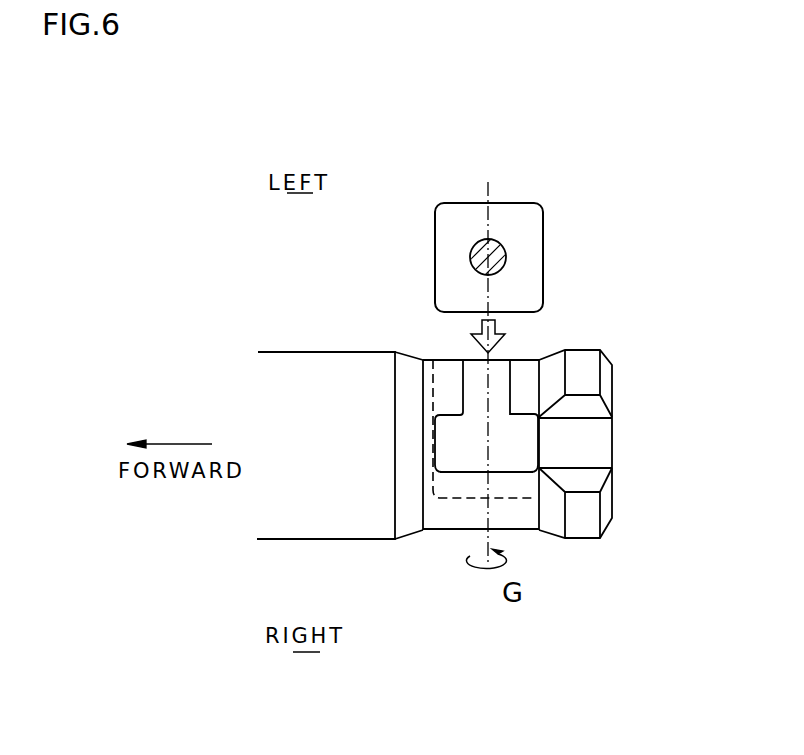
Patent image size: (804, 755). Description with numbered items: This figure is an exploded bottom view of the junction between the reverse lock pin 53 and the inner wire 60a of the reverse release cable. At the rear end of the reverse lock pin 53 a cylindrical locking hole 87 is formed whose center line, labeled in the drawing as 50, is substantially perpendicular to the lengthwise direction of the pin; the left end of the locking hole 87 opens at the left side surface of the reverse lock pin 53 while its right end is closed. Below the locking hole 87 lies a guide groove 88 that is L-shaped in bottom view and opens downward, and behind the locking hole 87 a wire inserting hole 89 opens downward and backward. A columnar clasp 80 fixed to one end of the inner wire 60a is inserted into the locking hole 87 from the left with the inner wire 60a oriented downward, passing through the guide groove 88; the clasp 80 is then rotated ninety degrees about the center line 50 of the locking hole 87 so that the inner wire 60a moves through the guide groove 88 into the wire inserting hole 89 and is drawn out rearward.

The reverse lock pin 53 is at (280, 527).
The guide groove 88 is at (472, 402).
The slot 50 is at (483, 463).
The locking hole 87 is at (453, 500).
The wire inserting hole 89 is at (597, 445).
The columnar clasp 80 is at (435, 238).
The inner wire 60a is at (492, 262).